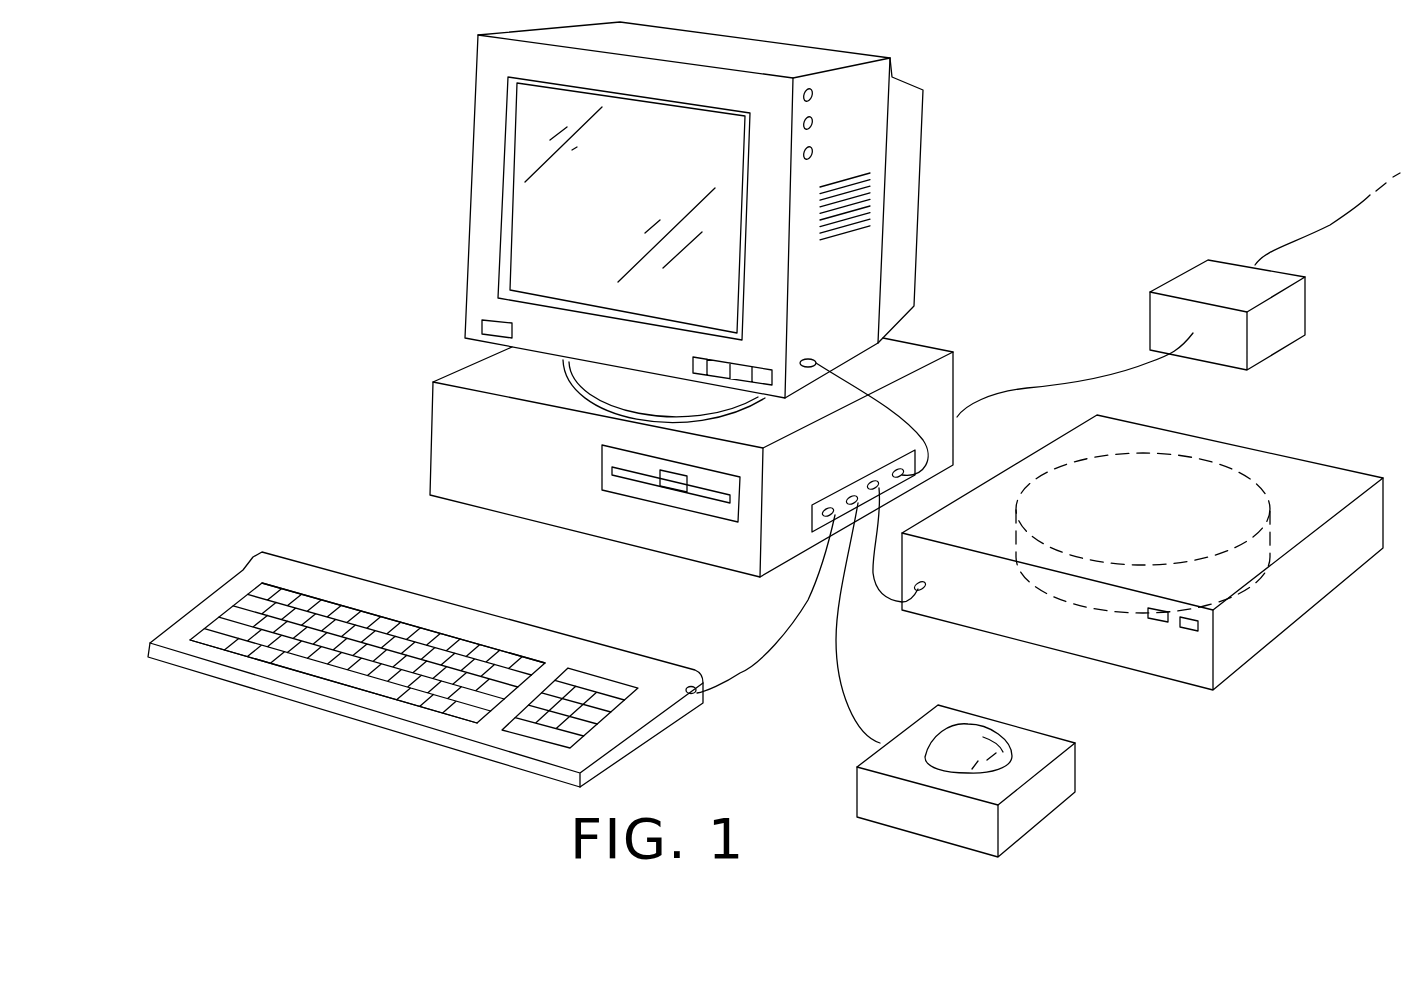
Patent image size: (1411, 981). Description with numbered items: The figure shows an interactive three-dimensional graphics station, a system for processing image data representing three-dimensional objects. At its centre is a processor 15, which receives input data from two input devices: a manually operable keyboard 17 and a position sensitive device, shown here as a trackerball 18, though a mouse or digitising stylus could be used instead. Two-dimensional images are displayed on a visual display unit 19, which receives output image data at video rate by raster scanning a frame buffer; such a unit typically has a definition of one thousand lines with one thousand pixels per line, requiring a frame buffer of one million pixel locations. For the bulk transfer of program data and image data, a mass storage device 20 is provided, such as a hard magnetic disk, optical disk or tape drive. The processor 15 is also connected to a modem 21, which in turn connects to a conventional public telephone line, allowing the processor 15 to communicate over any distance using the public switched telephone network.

The processor 15 is at (935, 393).
The keyboard 17 is at (360, 700).
The trackerball 18 is at (955, 742).
The visual display unit 19 is at (862, 148).
The mass storage device 20 is at (1098, 638).
The modem 21 is at (1227, 288).